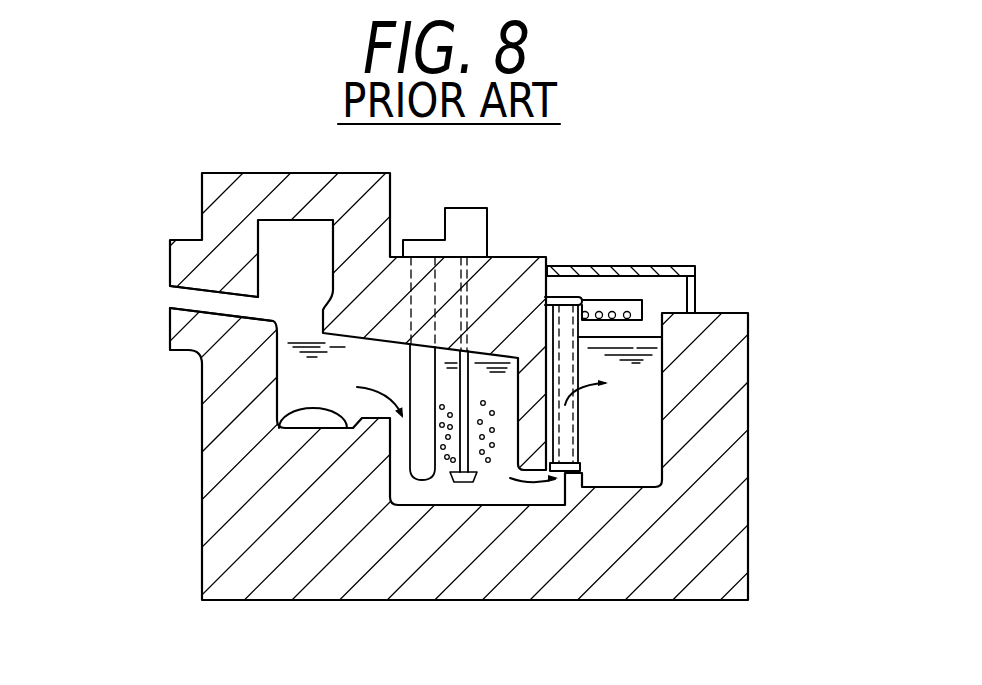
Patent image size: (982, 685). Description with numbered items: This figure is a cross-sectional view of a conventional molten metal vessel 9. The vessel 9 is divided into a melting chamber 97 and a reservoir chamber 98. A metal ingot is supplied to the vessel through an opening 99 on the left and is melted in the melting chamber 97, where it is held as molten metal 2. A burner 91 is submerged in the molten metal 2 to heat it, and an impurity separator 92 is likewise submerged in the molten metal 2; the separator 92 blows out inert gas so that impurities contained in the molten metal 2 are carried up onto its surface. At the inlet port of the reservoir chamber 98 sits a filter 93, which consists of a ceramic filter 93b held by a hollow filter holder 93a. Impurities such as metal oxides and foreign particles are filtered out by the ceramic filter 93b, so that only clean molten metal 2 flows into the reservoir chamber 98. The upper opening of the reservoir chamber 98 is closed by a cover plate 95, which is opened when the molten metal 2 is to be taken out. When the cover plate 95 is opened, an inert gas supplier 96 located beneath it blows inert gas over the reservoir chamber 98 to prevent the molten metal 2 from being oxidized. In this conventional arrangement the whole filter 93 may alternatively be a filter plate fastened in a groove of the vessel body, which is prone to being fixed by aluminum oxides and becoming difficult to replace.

The vessel 9 is at (527, 208).
The opening 99 is at (207, 302).
The molten metal 2 is at (288, 388).
The melting chamber 97 is at (277, 423).
The burner 91 is at (423, 462).
The impurity separator 92 is at (476, 463).
The filter 93 is at (607, 400).
The hollow filter holder 93a is at (567, 413).
The ceramic filter 93b is at (568, 475).
The cover plate 95 is at (608, 266).
The inert gas supplier 96 is at (643, 305).
The reservoir chamber 98 is at (628, 470).